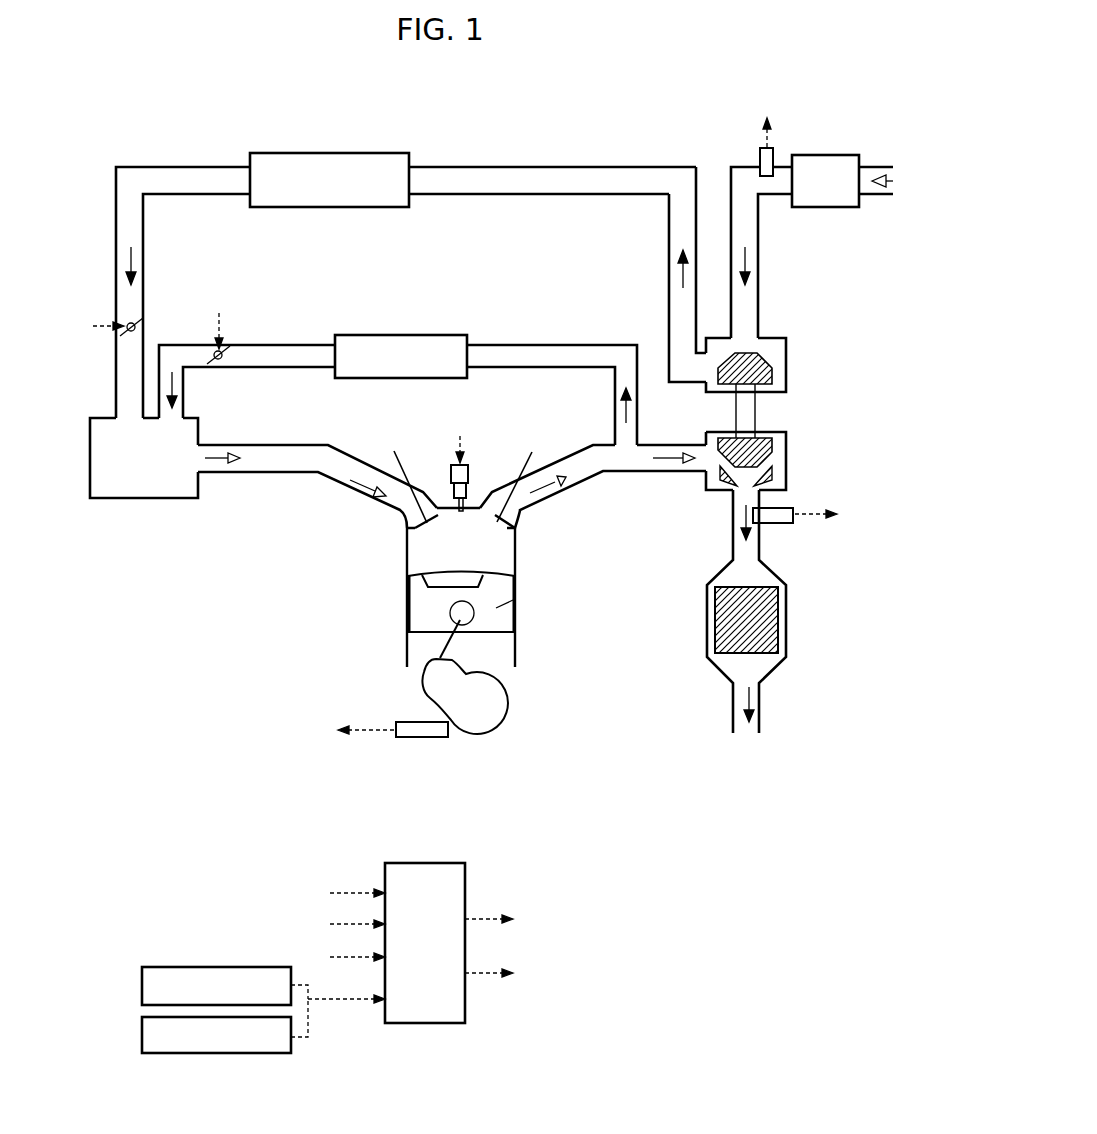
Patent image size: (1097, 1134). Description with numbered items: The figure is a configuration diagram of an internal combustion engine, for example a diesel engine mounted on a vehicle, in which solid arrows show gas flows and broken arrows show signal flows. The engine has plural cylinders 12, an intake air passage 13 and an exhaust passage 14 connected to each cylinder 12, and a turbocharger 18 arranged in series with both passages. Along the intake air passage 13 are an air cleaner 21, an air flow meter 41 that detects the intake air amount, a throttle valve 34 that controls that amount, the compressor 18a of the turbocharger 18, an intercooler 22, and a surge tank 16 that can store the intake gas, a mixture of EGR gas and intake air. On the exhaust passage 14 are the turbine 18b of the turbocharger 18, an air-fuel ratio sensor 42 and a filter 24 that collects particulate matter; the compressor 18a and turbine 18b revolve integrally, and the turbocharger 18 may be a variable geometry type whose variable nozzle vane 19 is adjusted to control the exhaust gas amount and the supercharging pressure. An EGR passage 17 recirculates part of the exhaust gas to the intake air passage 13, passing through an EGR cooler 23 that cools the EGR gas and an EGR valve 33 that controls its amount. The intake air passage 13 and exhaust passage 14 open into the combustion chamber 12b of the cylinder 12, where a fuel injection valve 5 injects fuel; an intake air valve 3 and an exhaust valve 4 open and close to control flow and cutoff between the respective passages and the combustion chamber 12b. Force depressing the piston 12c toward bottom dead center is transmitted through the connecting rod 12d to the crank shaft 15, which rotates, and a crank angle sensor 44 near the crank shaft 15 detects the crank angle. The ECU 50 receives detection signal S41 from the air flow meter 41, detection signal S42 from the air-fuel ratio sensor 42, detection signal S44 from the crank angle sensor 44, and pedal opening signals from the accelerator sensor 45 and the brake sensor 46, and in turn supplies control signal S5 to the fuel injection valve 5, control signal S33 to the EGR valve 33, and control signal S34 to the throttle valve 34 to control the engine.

The intake air valve 3 is at (396, 452).
The exhaust valve 4 is at (530, 452).
The fuel injection valve 5 is at (448, 470).
The cylinder 12 is at (473, 599).
The combustion chamber 12b is at (461, 542).
The piston 12c is at (525, 613).
The connecting rod 12d is at (440, 654).
The intake air passage 13 is at (200, 166).
The exhaust passage 14 is at (574, 455).
The crank shaft 15 is at (508, 690).
The surge tank 16 is at (148, 498).
The EGR passage 17 is at (288, 345).
The turbocharger 18 is at (802, 414).
The compressor 18a is at (786, 384).
The turbine 18b is at (774, 450).
The variable nozzle vane 19 is at (785, 472).
The air cleaner 21 is at (832, 154).
The intercooler 22 is at (336, 153).
The EGR cooler 23 is at (398, 335).
The filter 24 is at (780, 620).
The EGR valve 33 is at (212, 350).
The throttle valve 34 is at (127, 322).
The air flow meter 41 is at (758, 155).
The air-fuel ratio sensor 42 is at (795, 526).
The crank angle sensor 44 is at (412, 738).
The accelerator sensor 45 is at (142, 1034).
The brake sensor 46 is at (142, 982).
The ECU 50 is at (425, 1023).
The control signal S5 is at (497, 671).
The control signal S33 is at (230, 321).
The control signal S34 is at (301, 650).
The detection signal S41 is at (539, 503).
The detection signal S42 is at (585, 720).
The detection signal S44 is at (355, 733).